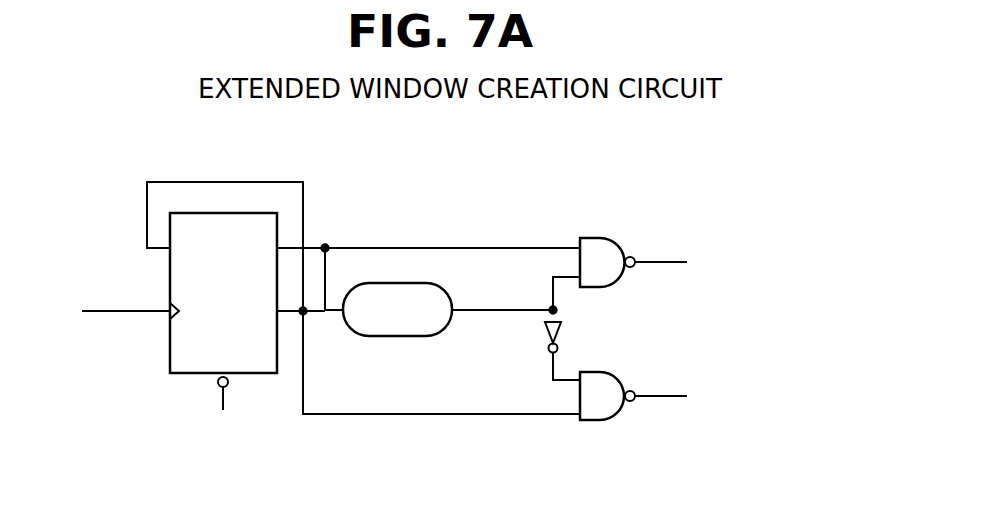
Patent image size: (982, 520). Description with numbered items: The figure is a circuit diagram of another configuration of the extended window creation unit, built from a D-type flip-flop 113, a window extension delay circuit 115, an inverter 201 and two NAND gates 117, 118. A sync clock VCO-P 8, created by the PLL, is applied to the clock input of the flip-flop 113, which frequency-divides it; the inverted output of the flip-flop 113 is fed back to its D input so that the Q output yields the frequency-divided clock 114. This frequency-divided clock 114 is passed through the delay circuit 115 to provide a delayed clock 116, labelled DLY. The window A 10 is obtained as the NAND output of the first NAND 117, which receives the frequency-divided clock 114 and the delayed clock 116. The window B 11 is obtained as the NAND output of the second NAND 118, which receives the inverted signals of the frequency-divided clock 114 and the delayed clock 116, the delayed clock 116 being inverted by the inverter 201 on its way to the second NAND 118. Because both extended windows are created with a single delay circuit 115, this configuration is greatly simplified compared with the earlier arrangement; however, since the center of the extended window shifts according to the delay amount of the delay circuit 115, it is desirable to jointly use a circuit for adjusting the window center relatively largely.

The sync clock VCO-P 8 is at (67, 276).
The D-type flip-flop 113 is at (245, 213).
The frequency-divided clock 114 is at (379, 246).
The window extension delay circuit 115 is at (372, 336).
The delayed clock 116 is at (472, 312).
The inverter 201 is at (545, 333).
The NAND 117 is at (597, 238).
The NAND 118 is at (597, 370).
The window A 10 is at (730, 240).
The window B 11 is at (728, 380).